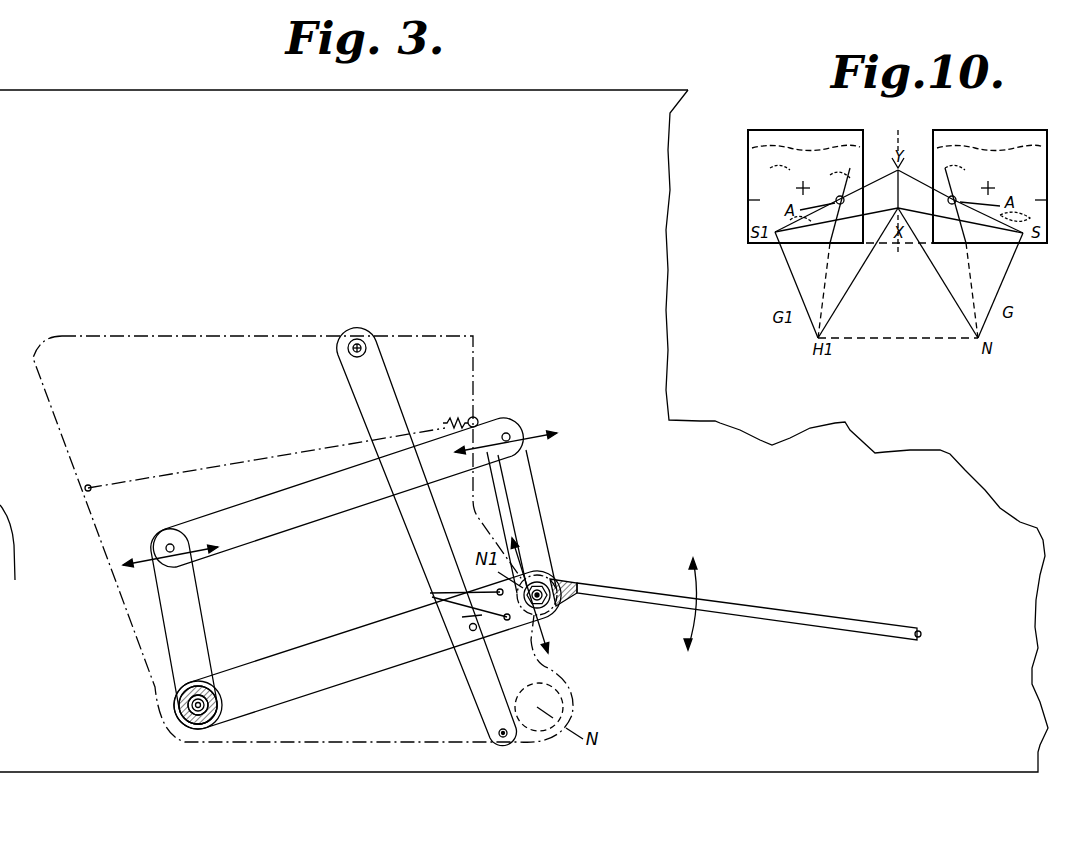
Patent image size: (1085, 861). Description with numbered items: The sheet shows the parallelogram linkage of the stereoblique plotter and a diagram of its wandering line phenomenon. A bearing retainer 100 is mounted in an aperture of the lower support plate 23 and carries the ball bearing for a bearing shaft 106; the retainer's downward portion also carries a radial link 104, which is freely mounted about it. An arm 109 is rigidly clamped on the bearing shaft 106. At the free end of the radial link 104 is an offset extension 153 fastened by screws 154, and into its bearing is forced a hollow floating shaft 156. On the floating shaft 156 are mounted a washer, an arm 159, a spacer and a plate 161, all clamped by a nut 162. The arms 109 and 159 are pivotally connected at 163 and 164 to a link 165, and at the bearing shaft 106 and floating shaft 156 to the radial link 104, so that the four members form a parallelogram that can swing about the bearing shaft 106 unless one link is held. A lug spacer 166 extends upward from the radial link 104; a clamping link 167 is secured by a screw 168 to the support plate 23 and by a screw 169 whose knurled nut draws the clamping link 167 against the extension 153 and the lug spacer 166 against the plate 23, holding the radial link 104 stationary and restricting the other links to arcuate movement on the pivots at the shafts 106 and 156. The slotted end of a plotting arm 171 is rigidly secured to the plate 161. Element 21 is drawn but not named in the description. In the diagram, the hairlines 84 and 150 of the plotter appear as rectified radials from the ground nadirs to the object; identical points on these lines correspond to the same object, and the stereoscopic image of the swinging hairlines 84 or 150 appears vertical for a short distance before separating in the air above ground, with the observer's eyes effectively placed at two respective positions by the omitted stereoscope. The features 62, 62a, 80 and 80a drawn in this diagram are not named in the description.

In FIG. 3, the base plate 21 is at (563, 103).
In FIG. 3, the lower support plate 23 is at (203, 337).
In FIG. 3, the bearing retainer 100 is at (180, 703).
In FIG. 3, the radial link 104 is at (337, 634).
In FIG. 3, the bearing shaft 106 is at (187, 713).
In FIG. 3, the arm 109 is at (190, 618).
In FIG. 3, the offset extension 153 is at (550, 622).
In FIG. 3, the screws 154 is at (430, 593).
In FIG. 3, the hollow floating shaft 156 is at (552, 593).
In FIG. 3, the arm 159 is at (534, 506).
In FIG. 3, the plate 161 is at (577, 583).
In FIG. 3, the nut 162 is at (550, 584).
In FIG. 3, the pivot connection 163 is at (168, 545).
In FIG. 3, the pivot connection 164 is at (512, 433).
In FIG. 3, the link 165 is at (323, 494).
In FIG. 3, the lug spacer 166 is at (468, 628).
In FIG. 3, the clamping link 167 is at (410, 536).
In FIG. 3, the screw 168 is at (366, 340).
In FIG. 3, the screw 169 is at (500, 738).
In FIG. 3, the plotting arm 171 is at (818, 618).
In FIG. 10, the left work block 62 is at (774, 133).
In FIG. 10, the left block face 62a is at (752, 198).
In FIG. 10, the right work block 80 is at (1032, 135).
In FIG. 10, the right block face 80a is at (1036, 192).
In FIG. 10, the hairline 84 is at (945, 184).
In FIG. 10, the hairline 150 is at (852, 184).